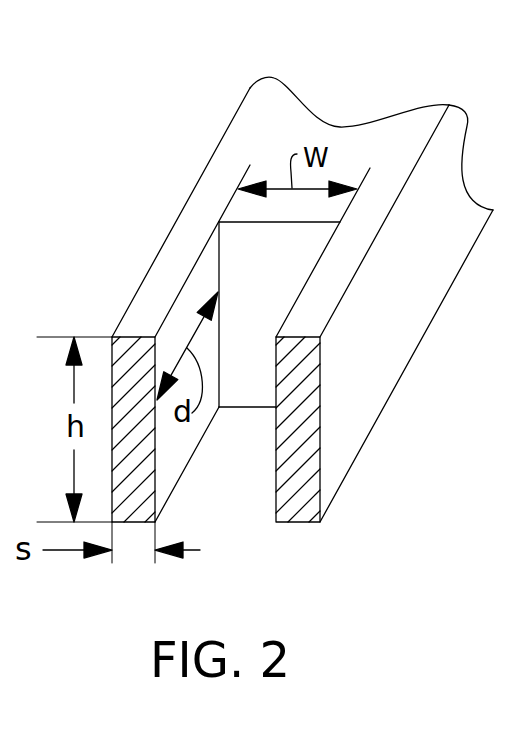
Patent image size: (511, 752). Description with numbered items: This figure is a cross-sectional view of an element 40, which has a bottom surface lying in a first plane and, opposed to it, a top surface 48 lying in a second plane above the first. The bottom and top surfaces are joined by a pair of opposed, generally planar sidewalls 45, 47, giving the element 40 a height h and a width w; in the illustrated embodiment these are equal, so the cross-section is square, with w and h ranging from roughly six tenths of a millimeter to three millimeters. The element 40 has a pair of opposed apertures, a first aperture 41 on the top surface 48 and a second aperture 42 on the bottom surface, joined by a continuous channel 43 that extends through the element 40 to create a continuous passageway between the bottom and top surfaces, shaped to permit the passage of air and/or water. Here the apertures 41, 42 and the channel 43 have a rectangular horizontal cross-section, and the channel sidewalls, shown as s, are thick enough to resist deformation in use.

The element 40 is at (282, 105).
The first aperture 41 is at (257, 287).
The second aperture 42 is at (228, 515).
The continuous channel 43 is at (253, 400).
The sidewall 45 is at (217, 157).
The sidewall 47 is at (442, 263).
The top surface 48 is at (413, 153).